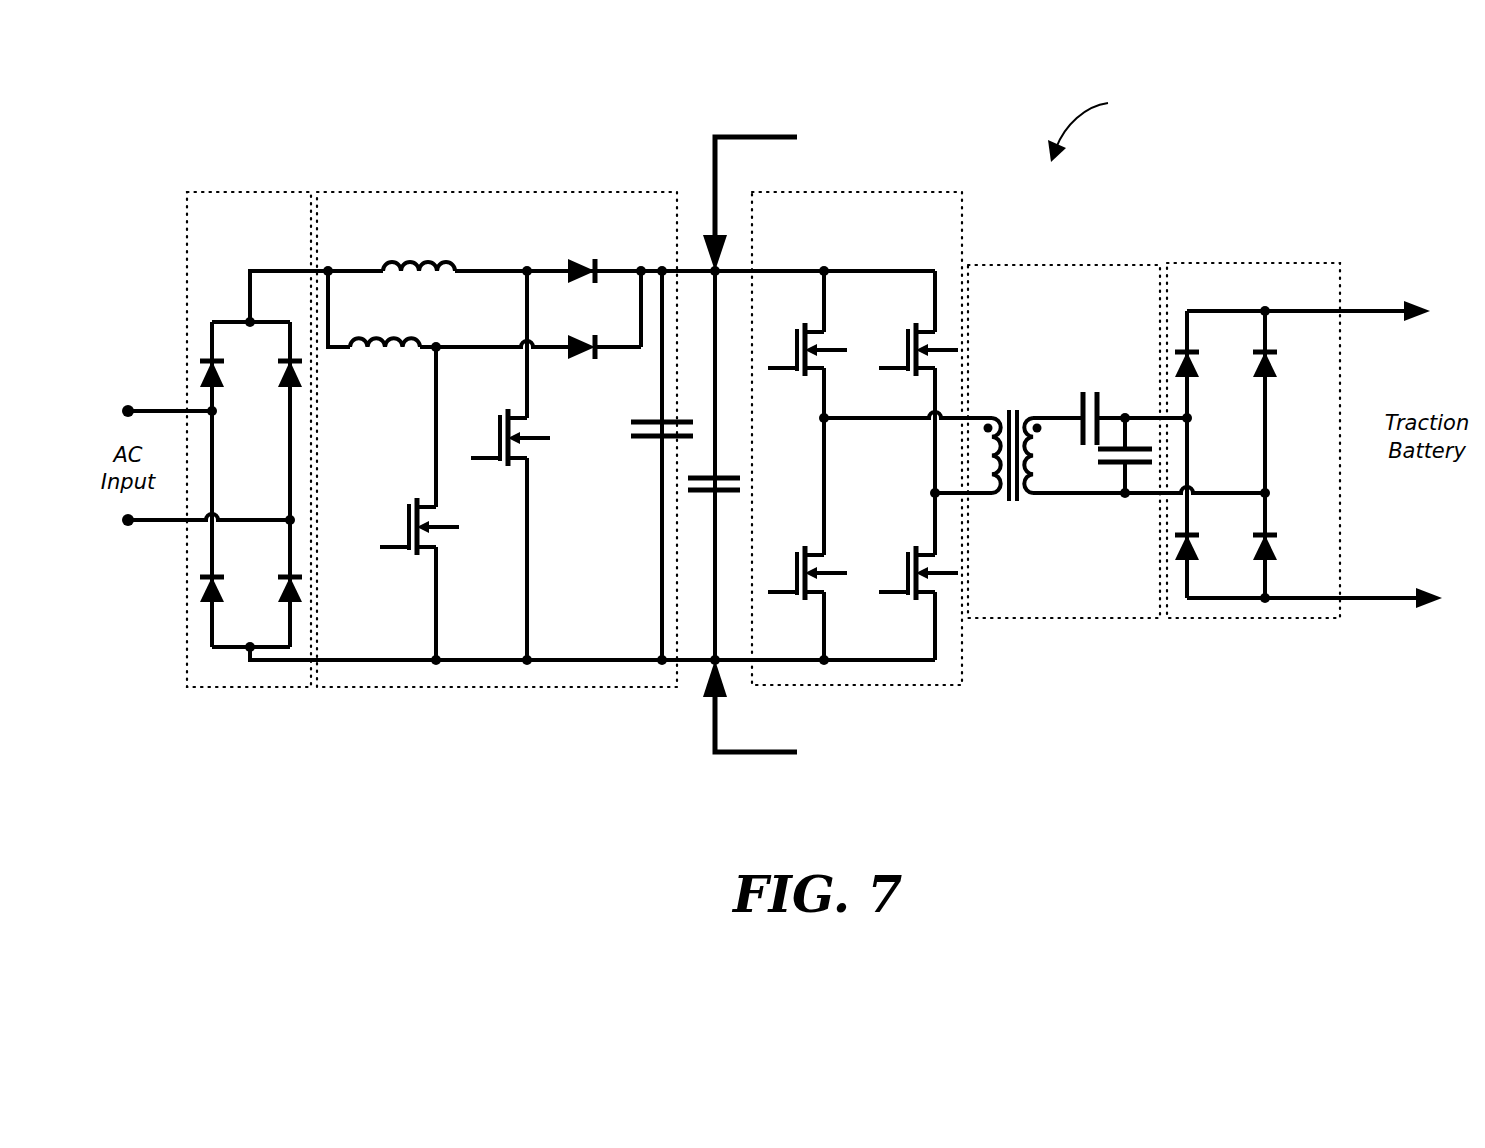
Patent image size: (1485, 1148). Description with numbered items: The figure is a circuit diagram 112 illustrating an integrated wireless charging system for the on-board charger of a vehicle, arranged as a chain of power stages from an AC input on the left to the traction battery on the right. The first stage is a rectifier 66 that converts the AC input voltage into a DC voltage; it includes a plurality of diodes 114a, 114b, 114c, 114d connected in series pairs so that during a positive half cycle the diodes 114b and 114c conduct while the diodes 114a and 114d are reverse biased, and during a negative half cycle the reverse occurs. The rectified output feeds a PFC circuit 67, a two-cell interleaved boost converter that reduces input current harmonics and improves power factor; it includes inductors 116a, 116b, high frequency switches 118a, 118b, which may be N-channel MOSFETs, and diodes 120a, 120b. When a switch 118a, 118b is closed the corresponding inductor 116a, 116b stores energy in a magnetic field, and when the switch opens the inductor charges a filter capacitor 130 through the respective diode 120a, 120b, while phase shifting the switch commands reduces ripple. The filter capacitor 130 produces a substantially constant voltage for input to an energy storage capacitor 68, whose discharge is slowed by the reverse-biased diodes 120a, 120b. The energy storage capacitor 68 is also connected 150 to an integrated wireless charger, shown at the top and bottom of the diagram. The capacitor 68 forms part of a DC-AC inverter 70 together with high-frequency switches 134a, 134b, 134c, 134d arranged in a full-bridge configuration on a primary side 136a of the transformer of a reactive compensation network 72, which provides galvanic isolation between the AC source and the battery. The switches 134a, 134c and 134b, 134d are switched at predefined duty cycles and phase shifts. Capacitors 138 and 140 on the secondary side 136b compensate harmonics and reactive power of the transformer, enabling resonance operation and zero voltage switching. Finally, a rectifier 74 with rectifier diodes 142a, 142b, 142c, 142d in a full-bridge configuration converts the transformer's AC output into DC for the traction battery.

The rectifier 66 is at (258, 190).
The PFC circuit 67 is at (495, 190).
The energy storage capacitor 68 is at (725, 477).
The DC-AC inverter 70 is at (945, 187).
The reactive compensation network 72 is at (1060, 263).
The rectifier 74 is at (1272, 262).
The circuit diagram 112 is at (1100, 129).
The diode 114a is at (212, 358).
The diode 114b is at (212, 574).
The diode 114c is at (290, 358).
The diode 114d is at (290, 574).
The inductor 116a is at (425, 262).
The inductor 116b is at (372, 344).
The high frequency switch 118a is at (424, 505).
The high frequency switch 118b is at (513, 416).
The diode 120a is at (578, 262).
The diode 120b is at (600, 337).
The filter capacitor 130 is at (640, 420).
The high-frequency switch 134a is at (820, 330).
The high-frequency switch 134b is at (820, 553).
The high-frequency switch 134c is at (928, 330).
The high-frequency switch 134d is at (927, 553).
The primary side 136a is at (975, 418).
The secondary side 136b is at (1046, 494).
The capacitor 138 is at (1098, 408).
The capacitor 140 is at (1115, 465).
The rectifier diode 142a is at (1193, 350).
The rectifier diode 142b is at (1193, 533).
The rectifier diode 142c is at (1270, 350).
The rectifier diode 142d is at (1270, 533).
The connection 150 is at (718, 134).